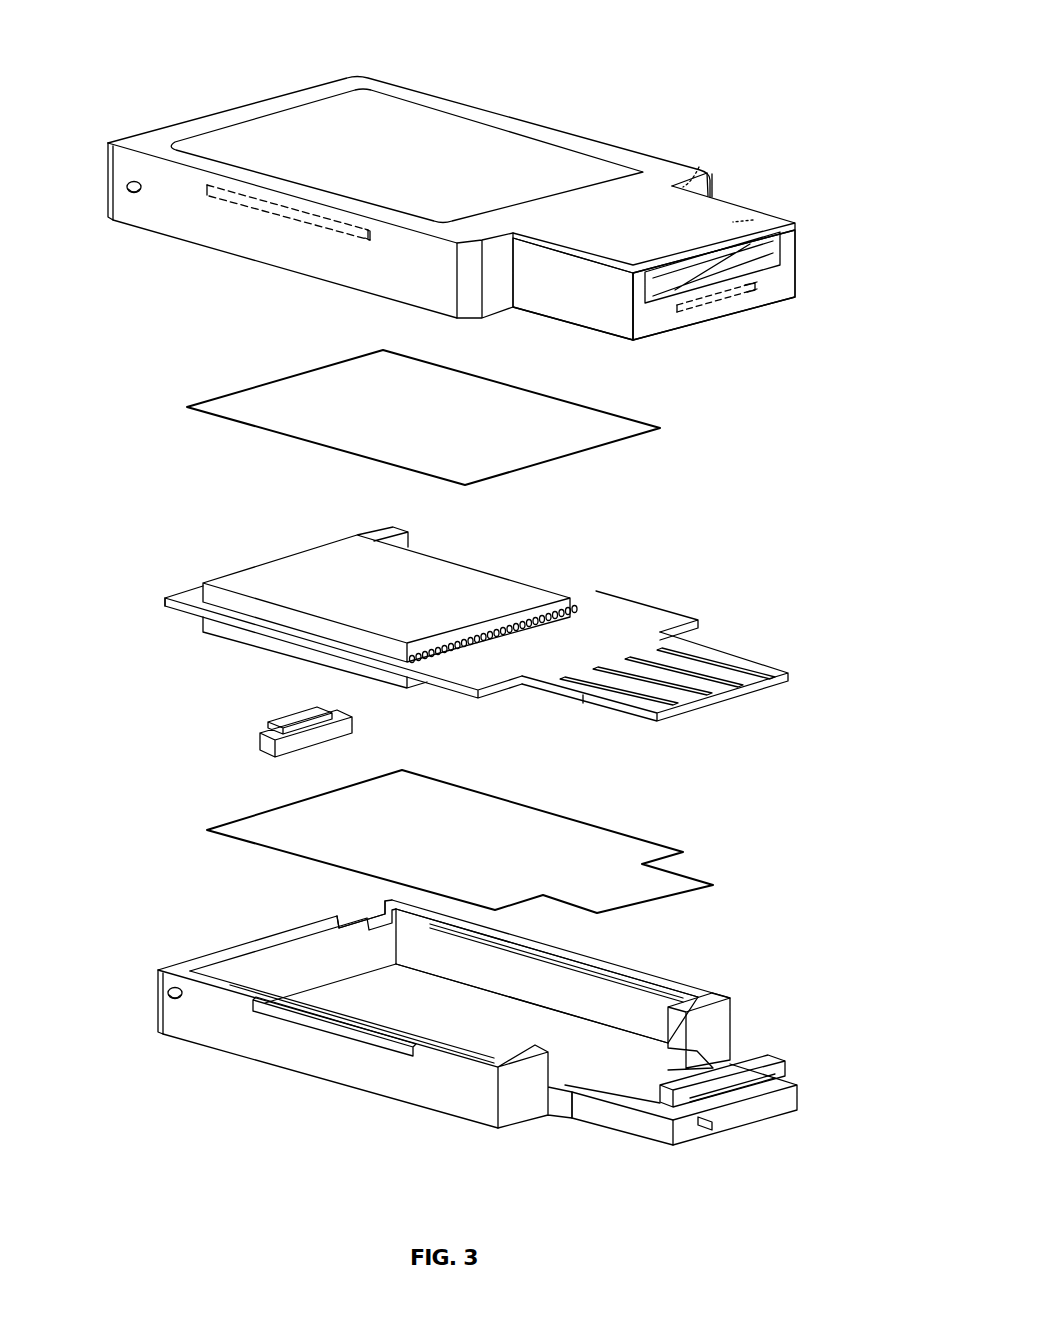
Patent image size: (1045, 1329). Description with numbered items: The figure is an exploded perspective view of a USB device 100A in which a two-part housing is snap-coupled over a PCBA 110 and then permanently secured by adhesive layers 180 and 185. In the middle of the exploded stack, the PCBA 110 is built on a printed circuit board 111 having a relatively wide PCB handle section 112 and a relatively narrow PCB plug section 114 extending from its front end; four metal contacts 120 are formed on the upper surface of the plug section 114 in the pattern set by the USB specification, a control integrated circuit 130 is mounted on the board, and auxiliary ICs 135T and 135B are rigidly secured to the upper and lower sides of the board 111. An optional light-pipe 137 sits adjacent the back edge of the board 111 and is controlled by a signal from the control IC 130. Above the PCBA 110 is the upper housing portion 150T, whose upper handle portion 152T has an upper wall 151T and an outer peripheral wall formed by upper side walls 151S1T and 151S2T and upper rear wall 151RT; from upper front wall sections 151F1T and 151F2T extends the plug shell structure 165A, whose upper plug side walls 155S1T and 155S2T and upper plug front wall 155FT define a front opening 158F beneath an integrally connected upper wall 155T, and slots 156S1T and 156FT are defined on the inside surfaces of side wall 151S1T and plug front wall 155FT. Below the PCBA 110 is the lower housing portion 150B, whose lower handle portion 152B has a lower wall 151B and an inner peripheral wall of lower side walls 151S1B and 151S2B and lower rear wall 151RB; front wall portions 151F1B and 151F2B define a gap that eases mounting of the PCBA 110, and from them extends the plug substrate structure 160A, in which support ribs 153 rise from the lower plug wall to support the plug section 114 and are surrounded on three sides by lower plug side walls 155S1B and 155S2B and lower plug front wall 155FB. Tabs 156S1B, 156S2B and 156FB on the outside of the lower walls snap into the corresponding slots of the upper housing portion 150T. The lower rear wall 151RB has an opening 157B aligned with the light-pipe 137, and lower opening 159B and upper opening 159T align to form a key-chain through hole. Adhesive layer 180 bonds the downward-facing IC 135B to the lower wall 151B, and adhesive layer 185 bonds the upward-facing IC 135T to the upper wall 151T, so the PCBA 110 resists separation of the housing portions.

The USB device 100A is at (710, 44).
The upper housing portion 150T is at (216, 75).
The upper wall 151T is at (332, 85).
The upper handle portion 152T is at (563, 118).
The upper rear wall 151RT is at (142, 149).
The upper opening 159T is at (122, 222).
The slot 156S1T is at (265, 210).
The upper side wall 151S1T is at (318, 263).
The upper front wall section 151F1T is at (500, 278).
The upper side wall 151S2T is at (698, 167).
The upper front wall section 151F2T is at (715, 188).
The upper wall 155T is at (758, 217).
The upper plug side wall 155S1T is at (585, 312).
The upper plug side wall 155S2T is at (753, 220).
The upper plug front wall 155FT is at (773, 290).
The front opening 158F is at (770, 250).
The slot 156FT is at (712, 302).
The plug shell structure 165A is at (617, 345).
The adhesive layer 185 is at (244, 384).
The PCBA 110 is at (209, 554).
The PCB handle section 112 is at (643, 598).
The PCB plug section 114 is at (721, 643).
The metal contacts 120 is at (730, 680).
The control integrated circuit 130 is at (538, 693).
The printed circuit board 111 is at (183, 598).
The IC 135T is at (443, 575).
The IC 135B is at (265, 645).
The light-pipe 137 is at (283, 710).
The adhesive layer 180 is at (249, 808).
The lower housing portion 150B is at (235, 930).
The lower wall 151B is at (480, 1035).
The lower side wall 151S1B is at (475, 1102).
The lower rear wall 151RB is at (193, 965).
The opening 157B is at (367, 917).
The lower opening 159B is at (172, 1003).
The tab 156S1B is at (328, 1025).
The lower handle portion 152B is at (693, 975).
The lower side wall 151S2B is at (657, 993).
The tab 156S2B is at (608, 960).
The front wall portion 151F1B is at (522, 1100).
The front wall portion 151F2B is at (710, 1037).
The plug substrate structure 160A is at (655, 1151).
The lower plug side wall 155S1B is at (643, 1122).
The lower plug front wall 155FB is at (688, 1130).
The lower plug side wall 155S2B is at (763, 1073).
The tab 156FB is at (753, 1110).
The support ribs 153 is at (740, 1077).